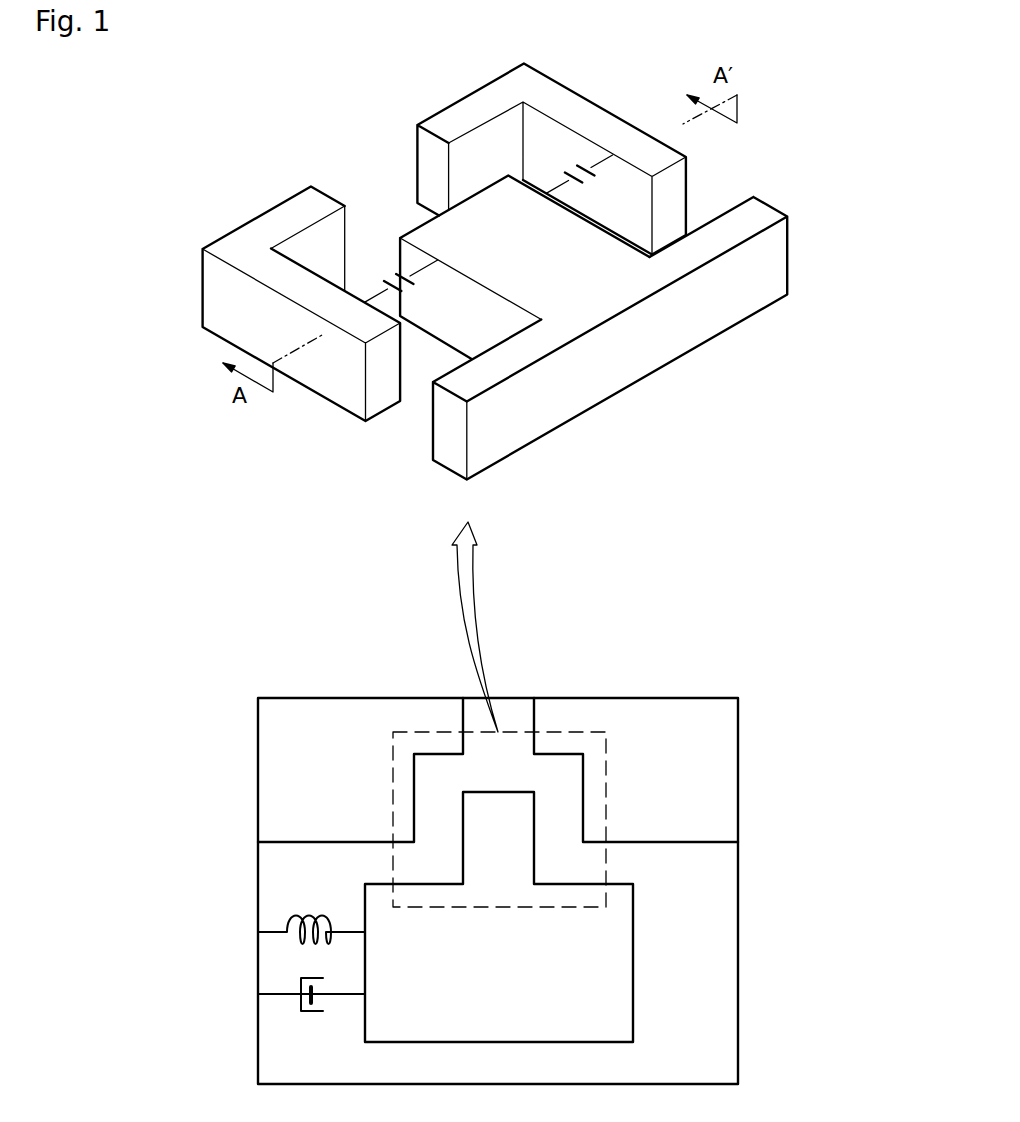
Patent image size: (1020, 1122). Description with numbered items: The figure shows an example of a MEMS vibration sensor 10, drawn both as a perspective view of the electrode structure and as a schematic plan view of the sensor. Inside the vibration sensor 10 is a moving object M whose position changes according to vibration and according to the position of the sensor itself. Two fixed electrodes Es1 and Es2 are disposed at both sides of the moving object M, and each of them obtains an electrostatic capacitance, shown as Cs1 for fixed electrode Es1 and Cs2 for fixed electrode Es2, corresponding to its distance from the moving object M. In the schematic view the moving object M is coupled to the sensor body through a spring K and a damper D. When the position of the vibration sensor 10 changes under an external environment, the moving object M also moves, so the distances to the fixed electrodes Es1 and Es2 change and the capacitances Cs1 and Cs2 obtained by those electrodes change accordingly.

The moving object M is at (576, 609).
The fixed electrode Es1 is at (333, 515).
The fixed electrode Es2 is at (577, 453).
The electrostatic capacitance Cs1 is at (405, 286).
The electrostatic capacitance Cs2 is at (586, 181).
The spring (stiffness) K is at (311, 916).
The damper D is at (311, 1009).
The vibration sensor 10 is at (738, 897).